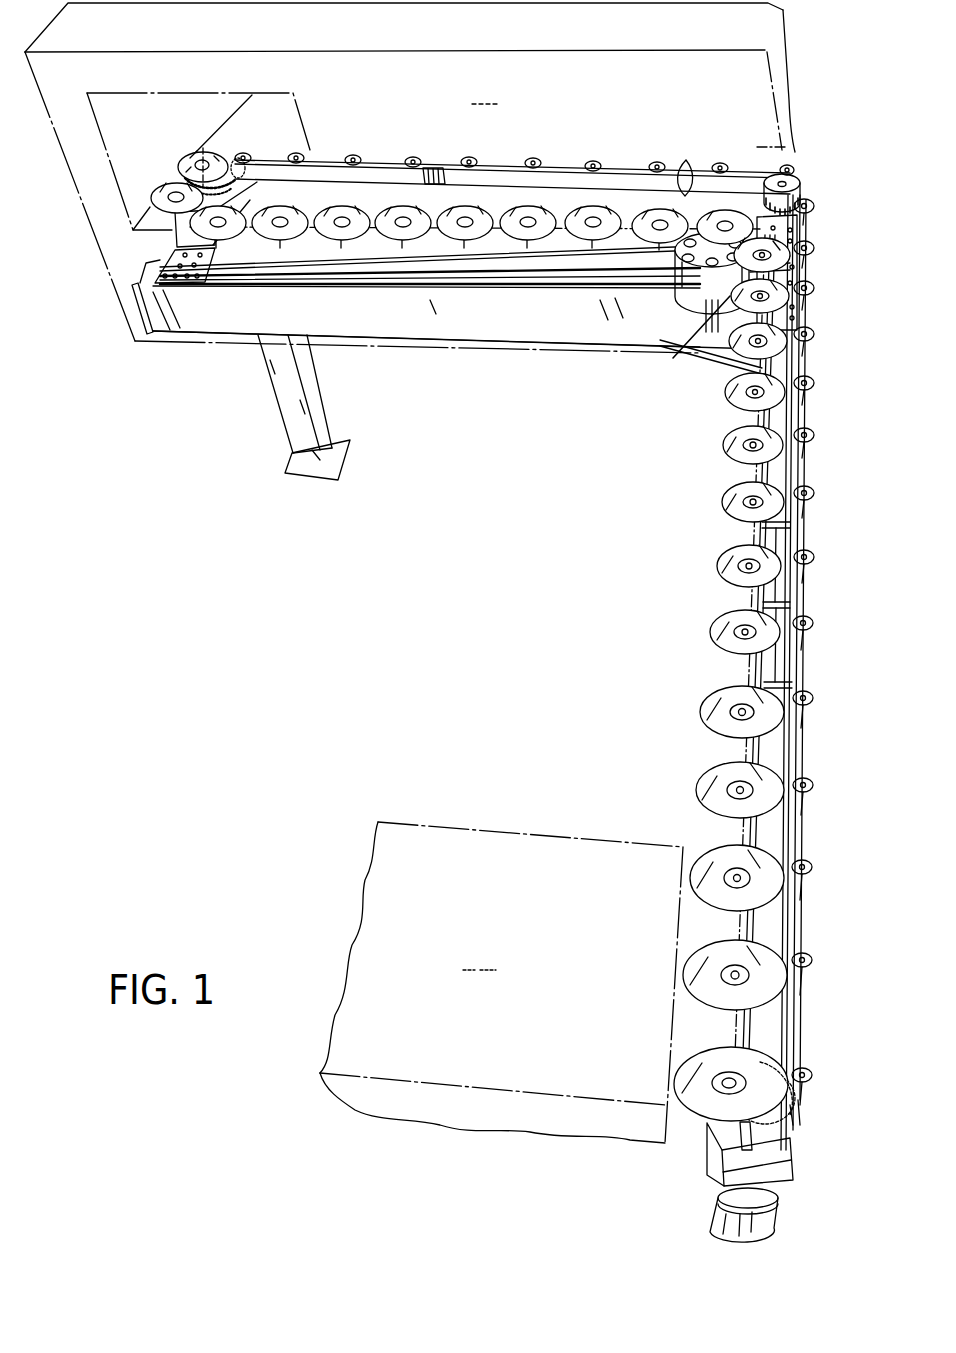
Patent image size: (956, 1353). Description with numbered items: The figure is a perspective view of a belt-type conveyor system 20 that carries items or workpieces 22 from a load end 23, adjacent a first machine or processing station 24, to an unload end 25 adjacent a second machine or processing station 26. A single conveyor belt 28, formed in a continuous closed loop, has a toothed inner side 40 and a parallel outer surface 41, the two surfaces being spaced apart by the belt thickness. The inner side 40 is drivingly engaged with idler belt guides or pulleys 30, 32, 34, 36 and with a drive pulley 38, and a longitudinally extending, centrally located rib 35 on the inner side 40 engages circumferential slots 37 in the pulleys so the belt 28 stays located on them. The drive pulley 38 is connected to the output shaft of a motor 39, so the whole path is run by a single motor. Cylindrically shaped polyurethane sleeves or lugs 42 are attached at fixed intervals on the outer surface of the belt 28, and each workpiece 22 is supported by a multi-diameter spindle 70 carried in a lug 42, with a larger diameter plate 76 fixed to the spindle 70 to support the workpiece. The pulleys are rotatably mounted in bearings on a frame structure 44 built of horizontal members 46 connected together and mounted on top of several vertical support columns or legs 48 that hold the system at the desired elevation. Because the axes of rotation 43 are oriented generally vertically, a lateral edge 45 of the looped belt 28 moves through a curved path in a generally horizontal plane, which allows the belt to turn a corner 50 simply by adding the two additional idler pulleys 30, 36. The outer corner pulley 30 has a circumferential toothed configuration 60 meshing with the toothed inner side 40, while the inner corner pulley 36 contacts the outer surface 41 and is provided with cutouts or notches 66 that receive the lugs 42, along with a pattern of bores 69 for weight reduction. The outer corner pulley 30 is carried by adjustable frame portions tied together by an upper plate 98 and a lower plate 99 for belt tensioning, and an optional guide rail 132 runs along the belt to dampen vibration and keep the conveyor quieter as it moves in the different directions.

The belt-type conveyor system 20 is at (372, 243).
The workpiece 22 is at (180, 166).
The load end 23 is at (238, 145).
The first machine or processing station 24 is at (486, 91).
The unload end 25 is at (648, 966).
The second machine or processing station 26 is at (501, 982).
The conveyor belt 28 is at (630, 166).
The outer corner idler pulley 30 is at (798, 172).
The idler pulley 32 is at (245, 167).
The idler pulley 34 is at (212, 212).
The rib 35 is at (437, 168).
The inner corner pulley 36 is at (688, 298).
The circumferential slot 37 is at (802, 190).
The drive pulley 38 is at (792, 1100).
The motor 39 is at (718, 1208).
The inner side 40 is at (485, 173).
The outer surface 41 is at (563, 168).
The lug 42 is at (530, 250).
The axis of rotation 43 is at (201, 148).
The frame structure 44 is at (512, 348).
The lateral edge 45 is at (686, 172).
The horizontal member 46 is at (416, 303).
The vertical support column or leg 48 is at (282, 400).
The conveyor corner 50 is at (805, 140).
The circumferential toothed configuration 60 is at (810, 204).
The cutout or notch 66 is at (695, 339).
The bore 69 is at (713, 300).
The spindle 70 is at (412, 157).
The plate 76 is at (802, 664).
The upper plate 98 is at (790, 280).
The lower plate 99 is at (725, 368).
The guide rail 132 is at (793, 540).